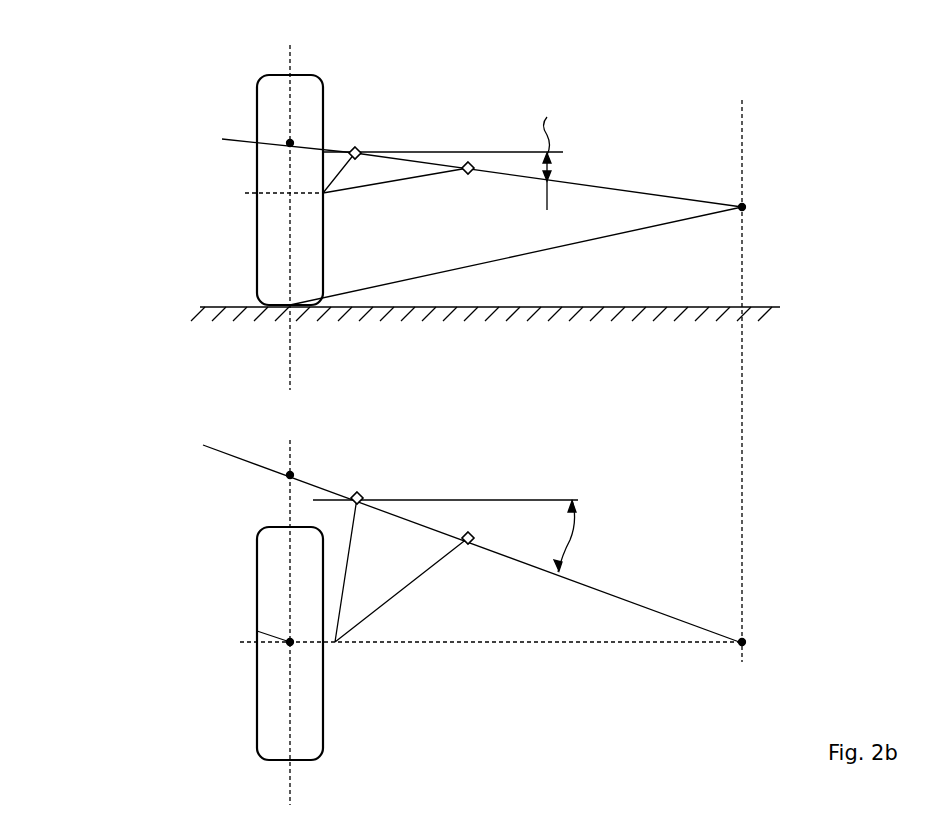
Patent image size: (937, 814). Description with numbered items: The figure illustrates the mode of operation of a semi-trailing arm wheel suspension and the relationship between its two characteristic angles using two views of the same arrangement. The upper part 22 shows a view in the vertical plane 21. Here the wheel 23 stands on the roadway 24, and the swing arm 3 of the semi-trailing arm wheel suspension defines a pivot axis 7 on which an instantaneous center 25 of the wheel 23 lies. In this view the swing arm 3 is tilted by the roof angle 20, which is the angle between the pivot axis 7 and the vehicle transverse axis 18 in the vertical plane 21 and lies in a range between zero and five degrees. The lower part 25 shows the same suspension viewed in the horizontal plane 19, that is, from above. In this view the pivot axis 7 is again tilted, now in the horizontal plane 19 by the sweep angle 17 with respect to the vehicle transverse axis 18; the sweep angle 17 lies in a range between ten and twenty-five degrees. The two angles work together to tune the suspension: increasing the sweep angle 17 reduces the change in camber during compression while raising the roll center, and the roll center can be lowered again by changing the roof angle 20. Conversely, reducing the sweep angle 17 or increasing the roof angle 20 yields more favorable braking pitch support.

The swing arm 3 is at (400, 188).
The pivot axis 7 is at (624, 189).
The sweep angle 17 is at (572, 536).
The vehicle transverse axis 18 is at (496, 150).
The horizontal plane 19 is at (573, 625).
The roof angle 20 is at (547, 118).
The vertical plane 21 is at (452, 237).
The upper part 22 is at (130, 182).
The wheel 23 is at (262, 78).
The roadway 24 is at (675, 306).
The instantaneous center 25 is at (745, 207).